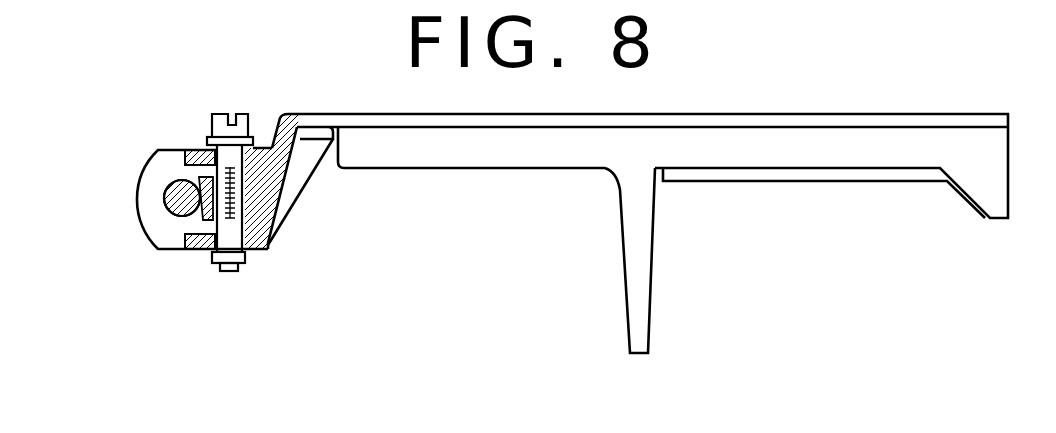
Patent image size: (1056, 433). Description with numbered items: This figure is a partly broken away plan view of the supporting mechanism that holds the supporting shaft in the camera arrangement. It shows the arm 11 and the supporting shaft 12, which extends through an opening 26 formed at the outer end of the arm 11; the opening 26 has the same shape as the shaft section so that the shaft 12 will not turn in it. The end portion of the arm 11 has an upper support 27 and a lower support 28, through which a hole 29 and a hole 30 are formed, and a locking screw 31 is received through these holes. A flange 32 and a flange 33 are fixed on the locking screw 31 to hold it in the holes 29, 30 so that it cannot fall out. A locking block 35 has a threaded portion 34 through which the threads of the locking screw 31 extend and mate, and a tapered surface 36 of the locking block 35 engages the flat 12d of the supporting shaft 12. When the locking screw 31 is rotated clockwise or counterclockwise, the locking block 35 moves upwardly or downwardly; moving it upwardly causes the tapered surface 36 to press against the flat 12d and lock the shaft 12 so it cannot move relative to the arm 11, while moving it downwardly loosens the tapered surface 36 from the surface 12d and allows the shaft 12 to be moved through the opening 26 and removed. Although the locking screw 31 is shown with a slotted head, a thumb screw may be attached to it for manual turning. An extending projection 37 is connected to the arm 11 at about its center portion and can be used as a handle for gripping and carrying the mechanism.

The arm 11 is at (643, 116).
The supporting shaft 12 is at (162, 203).
The flat of the supporting shaft 12d is at (217, 227).
The opening 26 is at (185, 177).
The upper support 27 is at (194, 153).
The lower support 28 is at (212, 249).
The hole 29 is at (208, 138).
The hole 30 is at (246, 259).
The locking screw 31 is at (242, 117).
The flange 32 is at (218, 116).
The flange 33 is at (232, 266).
The threaded portion 34 is at (178, 250).
The locking block 35 is at (255, 197).
The tapered surface 36 is at (170, 186).
The extending projection 37 is at (640, 250).